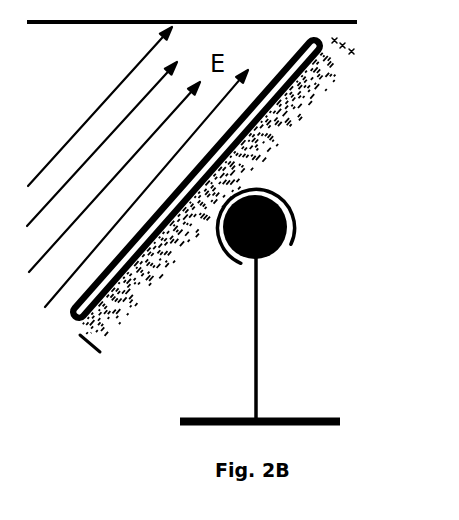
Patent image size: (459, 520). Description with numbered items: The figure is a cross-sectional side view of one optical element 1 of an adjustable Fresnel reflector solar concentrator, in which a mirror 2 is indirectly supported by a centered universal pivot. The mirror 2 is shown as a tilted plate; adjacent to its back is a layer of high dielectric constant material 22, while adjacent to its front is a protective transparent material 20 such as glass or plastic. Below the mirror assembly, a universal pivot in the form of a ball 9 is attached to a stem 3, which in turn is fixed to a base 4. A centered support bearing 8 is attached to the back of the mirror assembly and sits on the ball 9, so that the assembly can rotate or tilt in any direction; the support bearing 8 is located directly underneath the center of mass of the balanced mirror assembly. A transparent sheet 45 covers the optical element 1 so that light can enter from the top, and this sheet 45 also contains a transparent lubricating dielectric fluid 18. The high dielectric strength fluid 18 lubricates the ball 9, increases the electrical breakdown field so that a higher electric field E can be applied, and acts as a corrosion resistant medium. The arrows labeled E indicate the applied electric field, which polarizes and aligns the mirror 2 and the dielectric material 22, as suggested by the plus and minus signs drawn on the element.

The optical element 1 is at (94, 401).
The mirror 2 is at (75, 330).
The stem 3 is at (258, 378).
The base 4 is at (317, 416).
The centered support bearing 8 is at (281, 198).
The universal pivot (ball) 9 is at (272, 256).
The transparent lubricating dielectric fluid 18 is at (170, 390).
The protective transparent material 20 is at (298, 42).
The high dielectric constant material 22 is at (288, 143).
The transparent sheet 45 is at (32, 24).